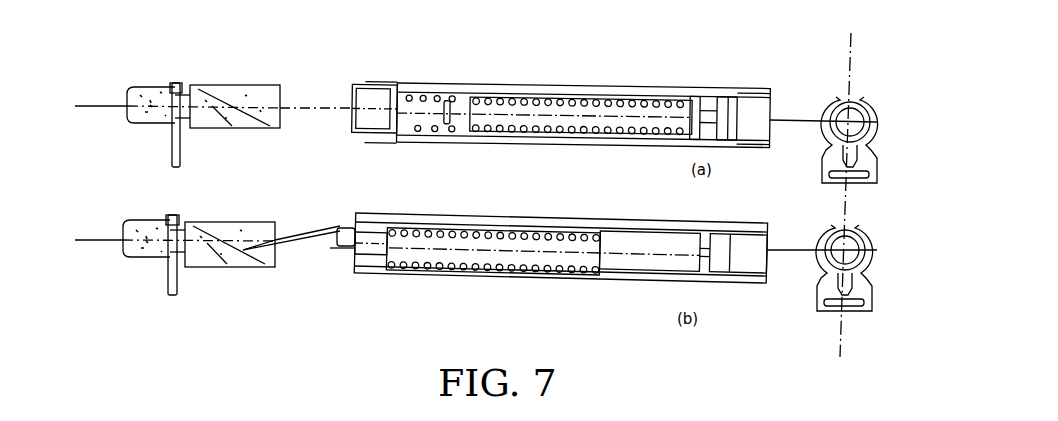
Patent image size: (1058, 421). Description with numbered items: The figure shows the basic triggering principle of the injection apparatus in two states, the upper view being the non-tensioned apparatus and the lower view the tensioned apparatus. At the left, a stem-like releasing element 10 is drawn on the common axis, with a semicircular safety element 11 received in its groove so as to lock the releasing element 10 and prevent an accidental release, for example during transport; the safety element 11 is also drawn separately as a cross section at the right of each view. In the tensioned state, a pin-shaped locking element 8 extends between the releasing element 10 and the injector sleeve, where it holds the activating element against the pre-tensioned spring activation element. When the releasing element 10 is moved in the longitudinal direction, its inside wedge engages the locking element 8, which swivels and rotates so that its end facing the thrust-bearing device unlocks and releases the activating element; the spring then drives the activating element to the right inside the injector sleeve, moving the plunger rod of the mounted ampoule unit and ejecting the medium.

In FIG. 7b, the locking element 8 is at (300, 237).
In FIG. 7a, the releasing element 10 is at (243, 93).
In FIG. 7b, the releasing element 10 is at (203, 222).
In FIG. 7a, the safety element 11 is at (182, 148).
In FIG. 7b, the safety element 11 is at (180, 281).